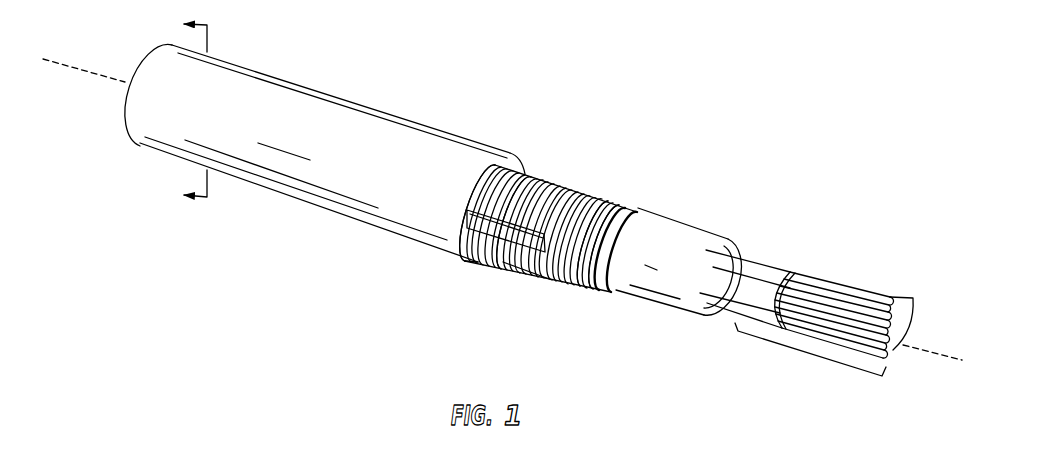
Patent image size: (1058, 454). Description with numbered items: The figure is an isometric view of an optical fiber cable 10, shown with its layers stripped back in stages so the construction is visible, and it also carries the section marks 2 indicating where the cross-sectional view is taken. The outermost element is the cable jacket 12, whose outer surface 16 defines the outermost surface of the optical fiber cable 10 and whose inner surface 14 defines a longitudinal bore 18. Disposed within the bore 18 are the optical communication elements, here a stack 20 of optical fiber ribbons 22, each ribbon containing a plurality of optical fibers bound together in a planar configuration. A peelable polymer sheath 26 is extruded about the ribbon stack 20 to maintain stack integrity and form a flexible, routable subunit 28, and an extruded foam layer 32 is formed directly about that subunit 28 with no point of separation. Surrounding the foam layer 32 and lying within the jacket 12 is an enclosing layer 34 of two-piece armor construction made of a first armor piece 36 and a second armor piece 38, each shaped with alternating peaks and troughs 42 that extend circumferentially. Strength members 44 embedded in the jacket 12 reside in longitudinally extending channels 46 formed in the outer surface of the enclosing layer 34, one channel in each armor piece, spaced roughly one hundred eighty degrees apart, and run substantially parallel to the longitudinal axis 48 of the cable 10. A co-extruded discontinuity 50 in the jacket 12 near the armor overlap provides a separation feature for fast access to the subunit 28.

The section line 2- 2 is at (190, 111).
The optical fiber cable 10 is at (549, 70).
The cable jacket 12 is at (322, 88).
The inner surface 14 is at (502, 260).
The outer surface 16 is at (373, 120).
The longitudinal bore 18 is at (536, 166).
The stack of optical fiber ribbons 20 is at (833, 271).
The optical fiber ribbon 22 is at (926, 314).
The sheath 26 is at (743, 296).
The subunit 28 is at (806, 354).
The foam layer 32 is at (636, 268).
The enclosing layer 34 is at (591, 186).
The first armor piece 36 is at (641, 208).
The second armor piece 38 is at (612, 291).
The peaks and troughs 42 is at (529, 274).
The strength members 44 is at (485, 227).
The channels 46 is at (601, 253).
The longitudinal axis 48 is at (100, 75).
The discontinuity 50 is at (478, 175).